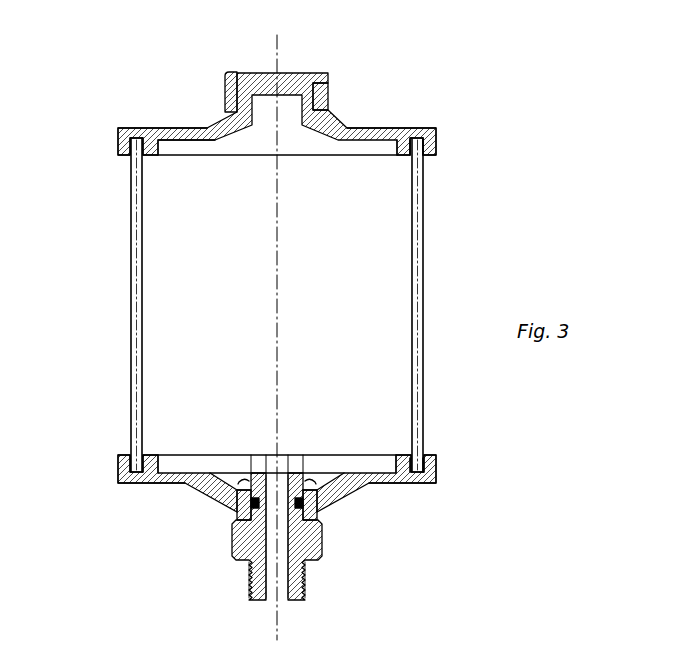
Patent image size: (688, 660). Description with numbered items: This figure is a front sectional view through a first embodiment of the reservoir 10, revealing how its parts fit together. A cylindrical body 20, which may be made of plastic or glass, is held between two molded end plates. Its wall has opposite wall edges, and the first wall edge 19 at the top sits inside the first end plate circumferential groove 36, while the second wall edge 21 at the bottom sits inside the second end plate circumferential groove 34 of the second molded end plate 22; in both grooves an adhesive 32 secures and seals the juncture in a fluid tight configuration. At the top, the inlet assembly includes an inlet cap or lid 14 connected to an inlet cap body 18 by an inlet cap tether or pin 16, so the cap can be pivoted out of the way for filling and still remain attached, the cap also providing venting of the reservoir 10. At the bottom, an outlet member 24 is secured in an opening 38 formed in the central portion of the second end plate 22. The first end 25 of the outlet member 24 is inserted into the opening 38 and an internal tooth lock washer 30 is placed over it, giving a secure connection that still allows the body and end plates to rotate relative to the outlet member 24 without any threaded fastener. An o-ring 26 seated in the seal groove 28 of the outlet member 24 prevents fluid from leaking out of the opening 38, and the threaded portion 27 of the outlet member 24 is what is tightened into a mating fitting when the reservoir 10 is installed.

The reservoir 10 is at (92, 98).
The inlet cap or lid 14 is at (290, 72).
The inlet cap tether or pin 16 is at (233, 72).
The inlet cap body 18 is at (330, 98).
The first wall edge 19 is at (118, 133).
The cylindrical body 20 is at (423, 262).
The second wall edge 21 is at (128, 477).
The second molded end plate 22 is at (407, 483).
The outlet member 24 is at (323, 547).
The first end of outlet member 25 is at (303, 502).
The o-ring 26 is at (317, 507).
The threaded portion 27 is at (250, 585).
The seal groove 28 is at (265, 505).
The internal tooth lock washer 30 is at (240, 483).
The adhesive 32 is at (423, 157).
The second end plate circumferential groove 34 is at (435, 472).
The first end plate circumferential groove 36 is at (427, 143).
The opening 38 is at (250, 490).